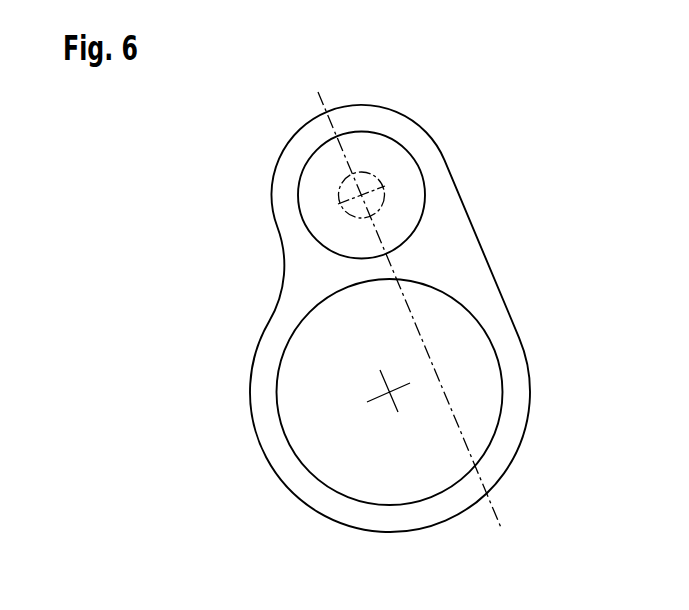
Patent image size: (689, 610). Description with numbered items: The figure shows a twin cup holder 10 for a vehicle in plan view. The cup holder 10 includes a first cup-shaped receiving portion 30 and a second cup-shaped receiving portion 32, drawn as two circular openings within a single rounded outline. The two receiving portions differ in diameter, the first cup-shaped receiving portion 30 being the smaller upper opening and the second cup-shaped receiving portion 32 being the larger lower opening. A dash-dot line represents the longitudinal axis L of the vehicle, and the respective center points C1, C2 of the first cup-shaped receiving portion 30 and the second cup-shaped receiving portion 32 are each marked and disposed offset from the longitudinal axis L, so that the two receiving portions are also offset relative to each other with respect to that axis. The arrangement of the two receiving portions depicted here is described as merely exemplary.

The cup holder 10 is at (508, 213).
The first cup-shaped receiving portion 30 is at (320, 226).
The second cup-shaped receiving portion 32 is at (323, 344).
The center point of the first cup-shaped receiving portion C1 is at (342, 197).
The center point of the second cup-shaped receiving portion C2 is at (384, 392).
The longitudinal axis L is at (498, 513).